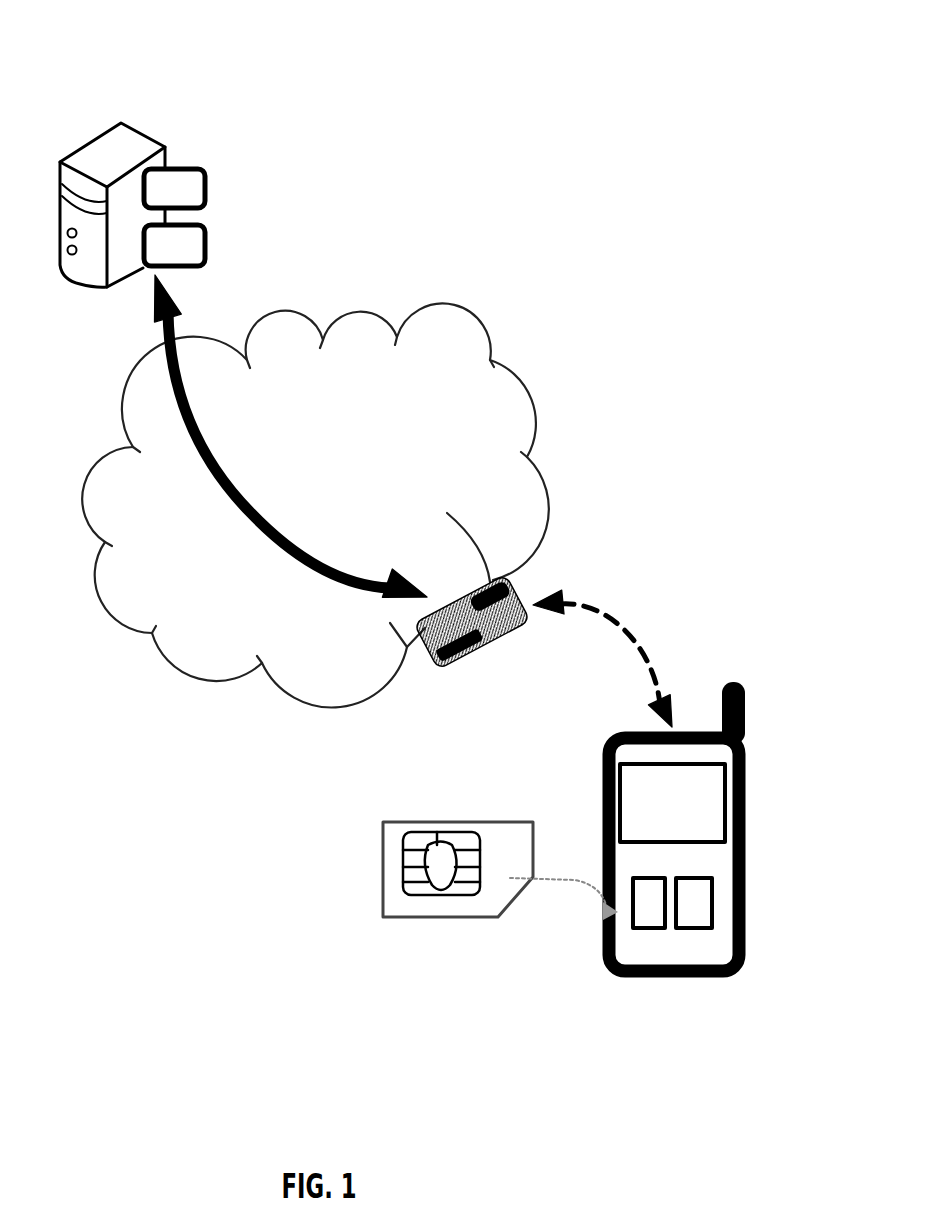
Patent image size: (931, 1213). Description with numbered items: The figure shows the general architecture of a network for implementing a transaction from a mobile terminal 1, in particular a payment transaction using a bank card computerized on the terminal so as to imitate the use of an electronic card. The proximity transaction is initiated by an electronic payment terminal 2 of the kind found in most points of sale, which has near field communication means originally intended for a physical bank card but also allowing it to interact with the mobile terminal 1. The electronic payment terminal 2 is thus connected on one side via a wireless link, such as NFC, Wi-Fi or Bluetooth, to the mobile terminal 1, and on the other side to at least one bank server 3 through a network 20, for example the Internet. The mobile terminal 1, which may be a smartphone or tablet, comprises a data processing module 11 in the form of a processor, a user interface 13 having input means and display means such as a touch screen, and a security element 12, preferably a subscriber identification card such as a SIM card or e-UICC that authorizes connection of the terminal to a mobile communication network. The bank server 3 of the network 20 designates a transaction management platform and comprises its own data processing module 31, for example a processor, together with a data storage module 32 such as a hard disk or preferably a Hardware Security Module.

The mobile terminal 1 is at (662, 826).
The electronic payment terminal 2 is at (525, 583).
The bank server 3 is at (127, 106).
The data processing module 11 is at (725, 896).
The security element 12 is at (459, 938).
The user interface 13 is at (736, 780).
The network 20 is at (469, 290).
The data processing module 31 is at (225, 242).
The data storage module 32 is at (225, 172).